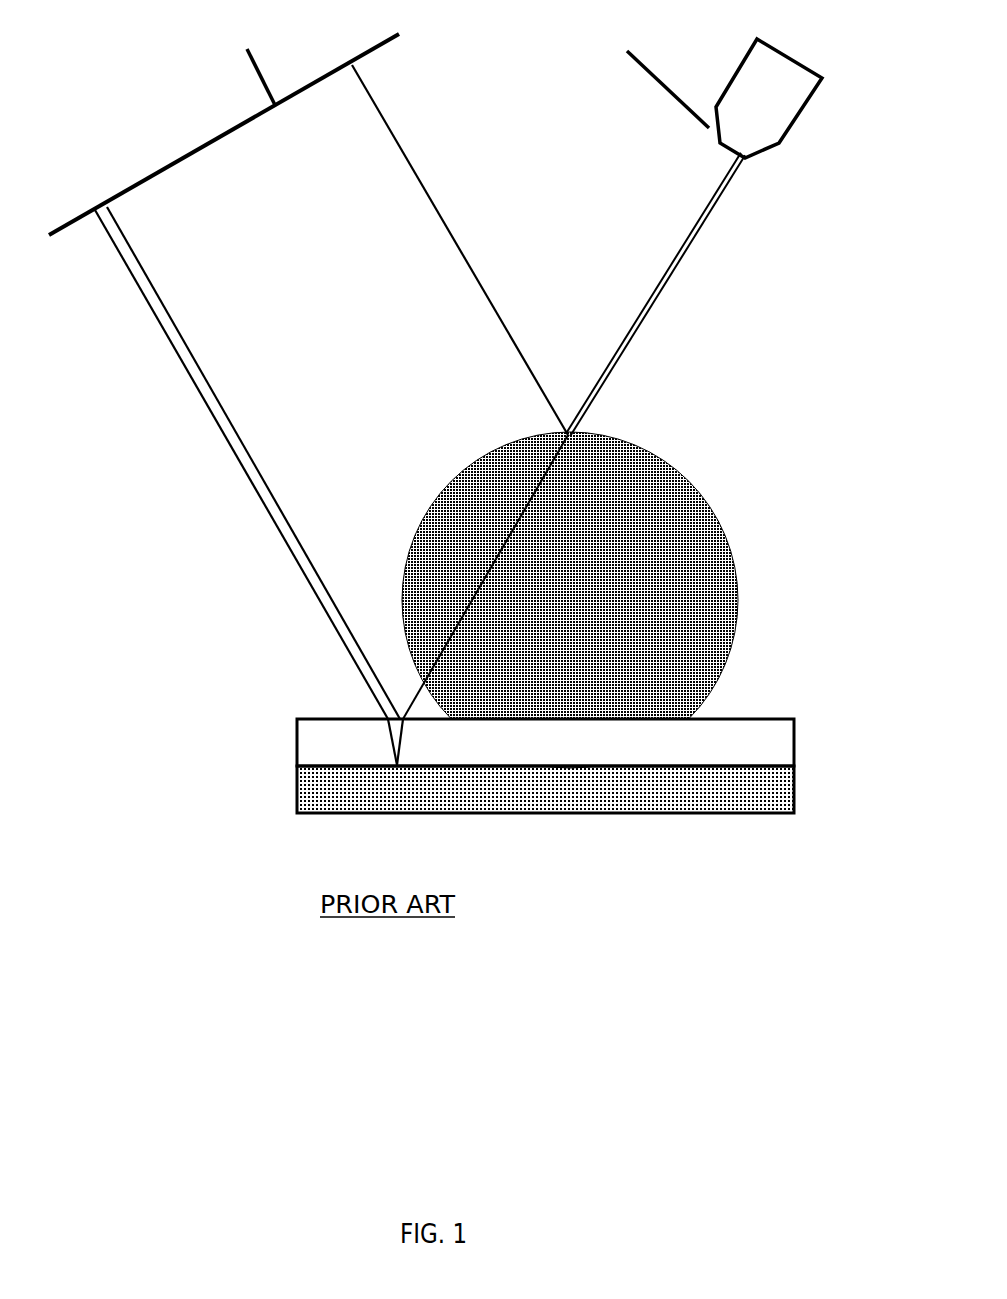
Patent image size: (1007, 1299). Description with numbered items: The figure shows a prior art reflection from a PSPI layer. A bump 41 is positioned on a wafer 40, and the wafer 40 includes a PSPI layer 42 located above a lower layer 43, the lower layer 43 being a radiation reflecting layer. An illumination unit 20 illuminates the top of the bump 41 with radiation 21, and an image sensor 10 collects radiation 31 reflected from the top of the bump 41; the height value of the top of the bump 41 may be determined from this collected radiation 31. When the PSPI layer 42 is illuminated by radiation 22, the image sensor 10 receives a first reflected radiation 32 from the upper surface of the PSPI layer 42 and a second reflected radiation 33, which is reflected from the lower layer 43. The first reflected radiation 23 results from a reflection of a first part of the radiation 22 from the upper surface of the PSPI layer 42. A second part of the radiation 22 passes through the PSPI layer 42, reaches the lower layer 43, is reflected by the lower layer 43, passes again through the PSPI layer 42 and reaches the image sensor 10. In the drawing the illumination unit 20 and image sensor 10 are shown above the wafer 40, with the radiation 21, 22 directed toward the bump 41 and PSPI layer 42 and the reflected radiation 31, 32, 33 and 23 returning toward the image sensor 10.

The image sensor 10 is at (320, 57).
The illumination unit 20 is at (764, 117).
The radiation 21 is at (647, 297).
The radiation 22 is at (657, 302).
The first reflected radiation 23 is at (404, 740).
The radiation 31 is at (445, 220).
The first reflected radiation 32 is at (238, 420).
The second reflected radiation 33 is at (394, 740).
The wafer 40 is at (574, 737).
The bump 41 is at (664, 518).
The PSPI layer 42 is at (753, 754).
The lower layer 43 is at (734, 808).